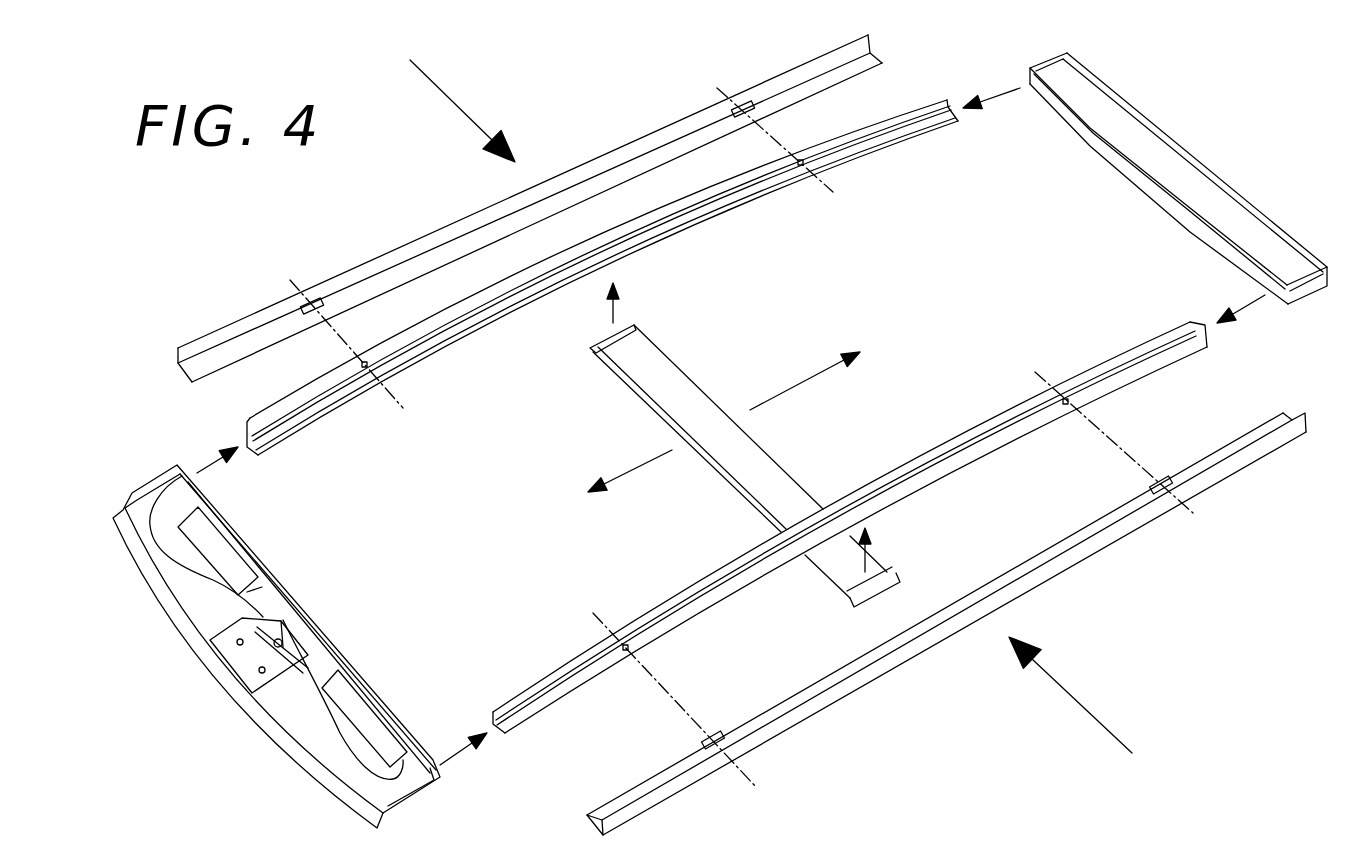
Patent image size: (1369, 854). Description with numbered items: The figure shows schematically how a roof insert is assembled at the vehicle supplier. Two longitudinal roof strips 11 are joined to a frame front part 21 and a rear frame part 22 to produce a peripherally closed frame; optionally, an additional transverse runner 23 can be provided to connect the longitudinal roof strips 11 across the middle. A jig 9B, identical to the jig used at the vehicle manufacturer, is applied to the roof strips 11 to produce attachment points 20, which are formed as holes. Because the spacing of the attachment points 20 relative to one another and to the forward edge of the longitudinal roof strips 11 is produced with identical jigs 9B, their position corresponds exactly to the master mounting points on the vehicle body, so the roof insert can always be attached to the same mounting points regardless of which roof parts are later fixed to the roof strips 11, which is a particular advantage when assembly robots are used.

The jig 9B is at (637, 148).
The longitudinal roof strips 11 is at (915, 117).
The attachment points 20 is at (800, 160).
The frame front part 21 is at (203, 688).
The rear frame part 22 is at (1229, 152).
The transverse runner 23 is at (695, 402).